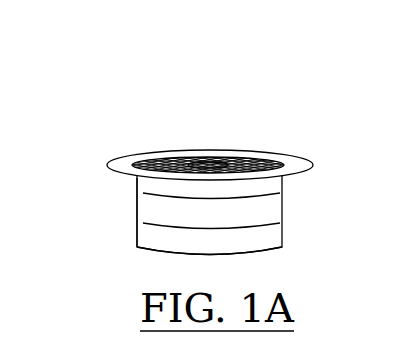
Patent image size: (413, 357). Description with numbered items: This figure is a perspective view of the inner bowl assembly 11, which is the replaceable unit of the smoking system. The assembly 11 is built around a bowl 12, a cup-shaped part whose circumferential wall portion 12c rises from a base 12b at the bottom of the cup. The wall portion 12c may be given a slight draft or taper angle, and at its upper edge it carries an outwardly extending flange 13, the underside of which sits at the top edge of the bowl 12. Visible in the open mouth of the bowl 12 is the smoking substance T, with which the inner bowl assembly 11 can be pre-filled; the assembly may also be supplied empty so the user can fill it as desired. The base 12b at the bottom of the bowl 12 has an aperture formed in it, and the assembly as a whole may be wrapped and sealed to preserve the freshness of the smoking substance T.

The inner bowl assembly 11 is at (150, 148).
The smoking substance T is at (217, 158).
The flange 13 is at (298, 162).
The bowl 12 is at (283, 213).
The circumferential wall portion 12c is at (135, 213).
The base 12b is at (148, 253).